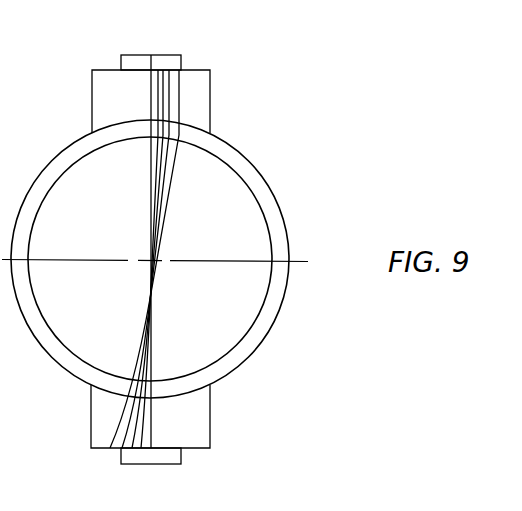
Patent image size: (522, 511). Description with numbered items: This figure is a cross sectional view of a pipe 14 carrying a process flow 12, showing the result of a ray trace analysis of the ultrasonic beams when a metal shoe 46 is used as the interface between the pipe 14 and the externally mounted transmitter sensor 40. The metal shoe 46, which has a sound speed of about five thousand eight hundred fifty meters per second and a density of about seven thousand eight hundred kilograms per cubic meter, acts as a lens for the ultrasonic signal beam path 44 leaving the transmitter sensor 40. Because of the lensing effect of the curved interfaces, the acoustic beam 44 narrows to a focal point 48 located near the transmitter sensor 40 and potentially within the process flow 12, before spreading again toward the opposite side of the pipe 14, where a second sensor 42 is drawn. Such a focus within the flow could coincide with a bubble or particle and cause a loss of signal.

The process flow 12 is at (98, 313).
The pipe 14 is at (287, 217).
The transmitter sensor 40 is at (177, 61).
The lower fiber bundle end 42 is at (182, 458).
The ultrasonic signal beam path 44 is at (175, 202).
The metal shoe 46 is at (200, 97).
The focal point 48 is at (150, 301).